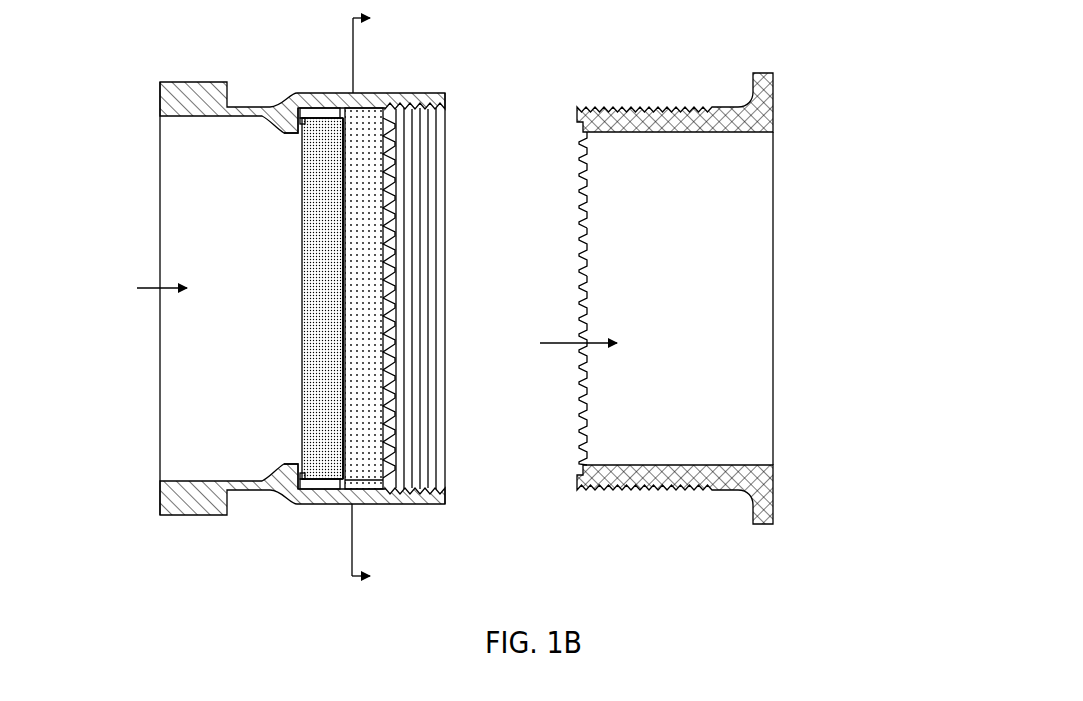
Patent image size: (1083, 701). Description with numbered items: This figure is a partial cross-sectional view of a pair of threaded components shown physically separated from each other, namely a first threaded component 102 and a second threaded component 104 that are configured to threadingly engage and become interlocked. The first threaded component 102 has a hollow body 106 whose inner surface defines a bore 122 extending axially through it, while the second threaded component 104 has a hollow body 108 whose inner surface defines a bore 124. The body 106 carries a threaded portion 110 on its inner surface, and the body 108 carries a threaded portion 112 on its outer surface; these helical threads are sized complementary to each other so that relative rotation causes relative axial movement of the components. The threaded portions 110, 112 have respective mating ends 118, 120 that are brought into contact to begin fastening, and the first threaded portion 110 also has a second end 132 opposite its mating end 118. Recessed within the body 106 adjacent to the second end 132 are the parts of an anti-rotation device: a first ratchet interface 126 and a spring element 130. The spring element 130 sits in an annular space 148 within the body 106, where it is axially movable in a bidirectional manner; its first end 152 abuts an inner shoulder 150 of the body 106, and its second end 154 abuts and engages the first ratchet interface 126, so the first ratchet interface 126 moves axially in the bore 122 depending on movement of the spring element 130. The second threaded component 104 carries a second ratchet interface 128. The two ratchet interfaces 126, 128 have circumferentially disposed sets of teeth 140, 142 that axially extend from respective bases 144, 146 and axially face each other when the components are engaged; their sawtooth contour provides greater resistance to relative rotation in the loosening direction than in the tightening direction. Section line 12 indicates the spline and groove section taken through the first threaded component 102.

The section line 12- 12 is at (374, 298).
The first threaded component 102 is at (170, 100).
The second threaded component 104 is at (773, 117).
The body 106 is at (187, 90).
The body 108 is at (733, 108).
The threaded portion 110 is at (415, 108).
The threaded portion 112 is at (625, 108).
The mating end 118 is at (447, 497).
The mating end 120 is at (577, 480).
The bore 122 is at (143, 289).
The bore 124 is at (560, 344).
The first ratchet interface 126 is at (365, 122).
The second ratchet interface 128 is at (578, 210).
The spring element 130 is at (335, 120).
The second end 132 is at (360, 490).
The set of teeth 140 is at (385, 240).
The set of teeth 142 is at (580, 250).
The base 144 is at (383, 200).
The base 146 is at (580, 302).
The annular space 148 is at (315, 107).
The inner shoulder 150 is at (297, 117).
The first end 152 is at (302, 278).
The second end 154 is at (343, 322).